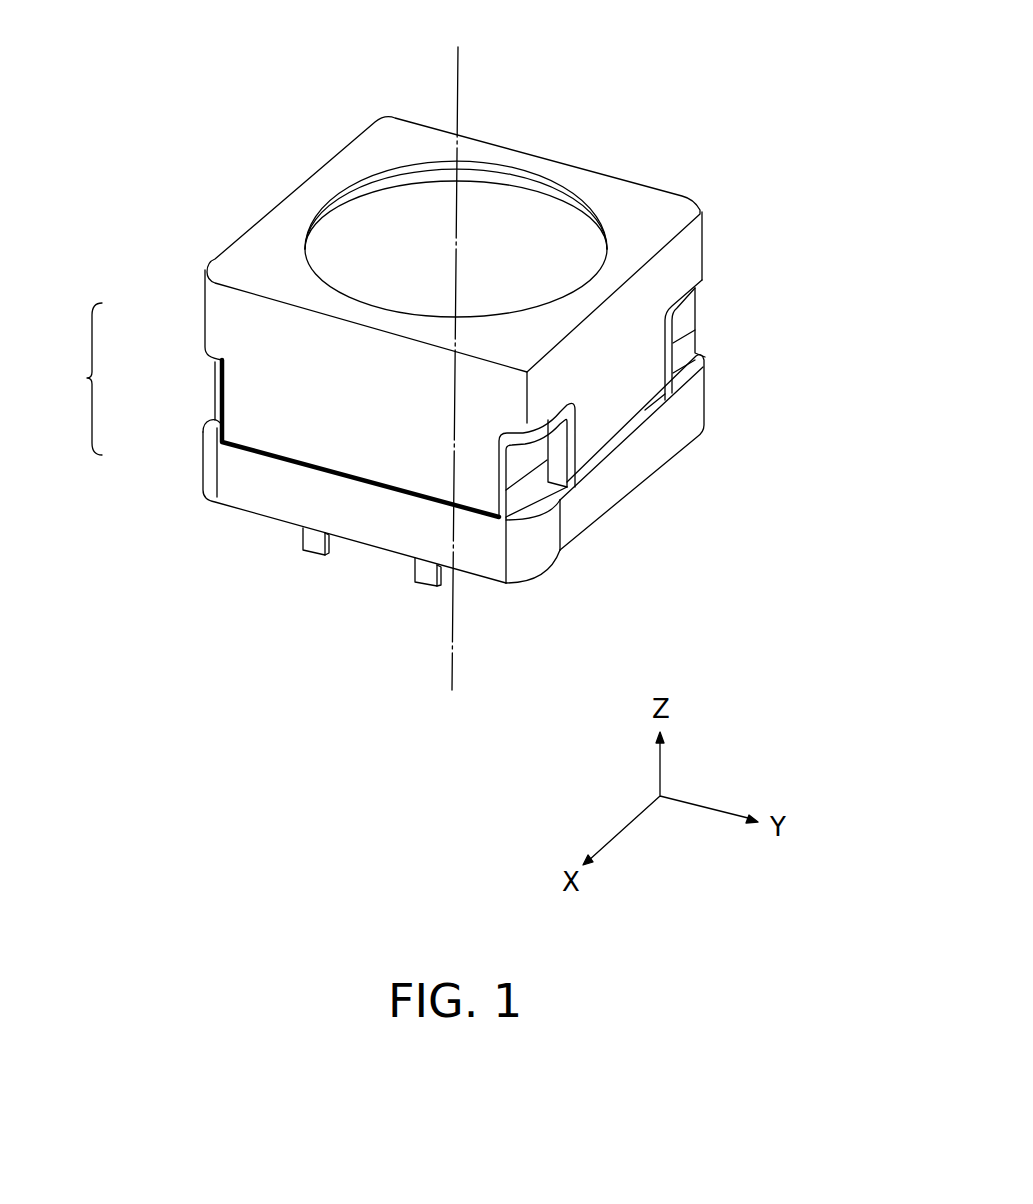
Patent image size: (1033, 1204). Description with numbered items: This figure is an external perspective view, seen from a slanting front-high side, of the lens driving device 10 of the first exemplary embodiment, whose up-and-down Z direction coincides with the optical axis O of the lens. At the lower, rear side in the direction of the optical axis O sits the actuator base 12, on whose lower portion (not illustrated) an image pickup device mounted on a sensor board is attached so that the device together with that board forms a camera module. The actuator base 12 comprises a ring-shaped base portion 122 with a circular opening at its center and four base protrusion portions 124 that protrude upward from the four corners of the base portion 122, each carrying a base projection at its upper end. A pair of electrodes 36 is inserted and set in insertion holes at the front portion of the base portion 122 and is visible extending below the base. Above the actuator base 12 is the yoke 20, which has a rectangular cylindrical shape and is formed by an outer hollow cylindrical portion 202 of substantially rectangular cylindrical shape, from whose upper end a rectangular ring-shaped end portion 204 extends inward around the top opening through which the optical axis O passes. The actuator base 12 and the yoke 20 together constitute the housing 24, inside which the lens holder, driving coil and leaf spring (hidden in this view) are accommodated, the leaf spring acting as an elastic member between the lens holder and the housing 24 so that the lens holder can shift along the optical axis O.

The lens driving device 10 is at (752, 90).
The actuator base 12 is at (426, 469).
The yoke 20 is at (207, 313).
The housing 24 is at (74, 379).
The electrodes 36 is at (300, 537).
The base portion 122 is at (602, 488).
The base protrusion portions 124 is at (215, 380).
The outer hollow cylindrical portion 202 is at (700, 248).
The ring portion 204 is at (645, 192).
The optical axis O is at (462, 70).